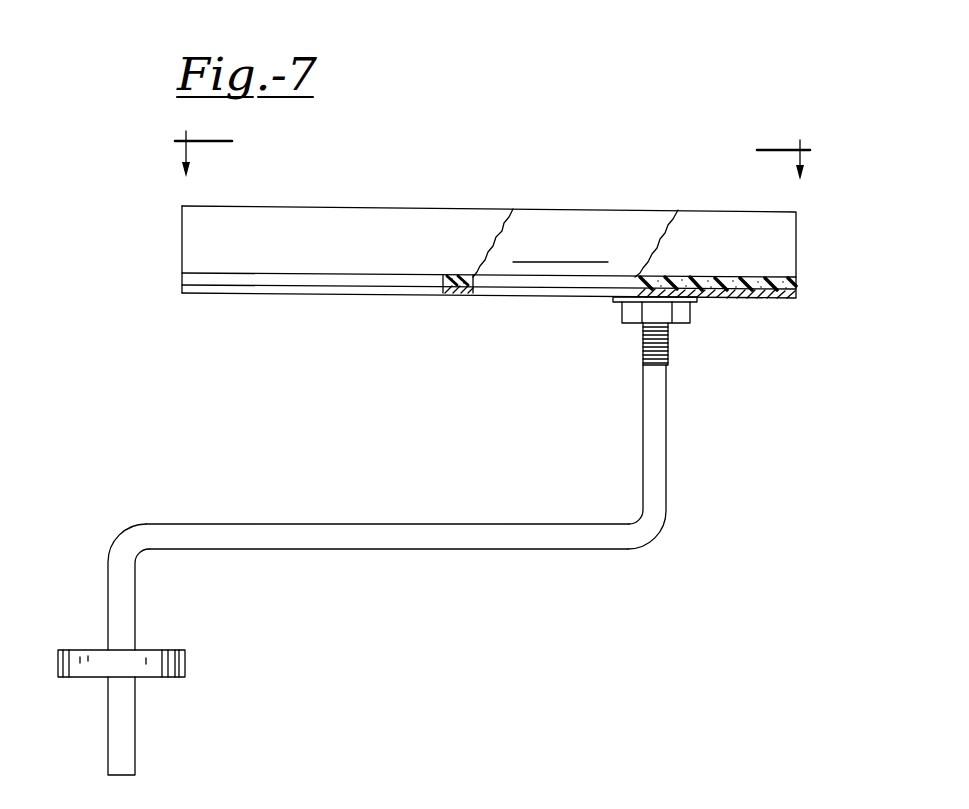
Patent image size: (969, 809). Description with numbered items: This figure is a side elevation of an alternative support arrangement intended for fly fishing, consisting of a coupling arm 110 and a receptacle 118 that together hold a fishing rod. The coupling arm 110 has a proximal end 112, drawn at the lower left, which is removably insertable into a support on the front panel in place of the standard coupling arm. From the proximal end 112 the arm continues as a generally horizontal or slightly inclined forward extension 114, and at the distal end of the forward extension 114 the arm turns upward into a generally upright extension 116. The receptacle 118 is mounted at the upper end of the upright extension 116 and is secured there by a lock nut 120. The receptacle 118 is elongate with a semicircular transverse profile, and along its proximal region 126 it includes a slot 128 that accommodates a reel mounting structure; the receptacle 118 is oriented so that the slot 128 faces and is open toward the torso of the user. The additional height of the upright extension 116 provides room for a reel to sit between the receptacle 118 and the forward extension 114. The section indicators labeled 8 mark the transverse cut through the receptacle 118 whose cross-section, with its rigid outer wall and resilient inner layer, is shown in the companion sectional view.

The section line 8 is at (492, 169).
The coupling arm 110 is at (407, 570).
The proximal end 112 is at (108, 605).
The forward extension 114 is at (345, 525).
The upright extension 116 is at (667, 453).
The receptacle 118 is at (560, 186).
The lock nut 120 is at (622, 312).
The proximal region 126 is at (182, 240).
The slot 128 is at (285, 275).